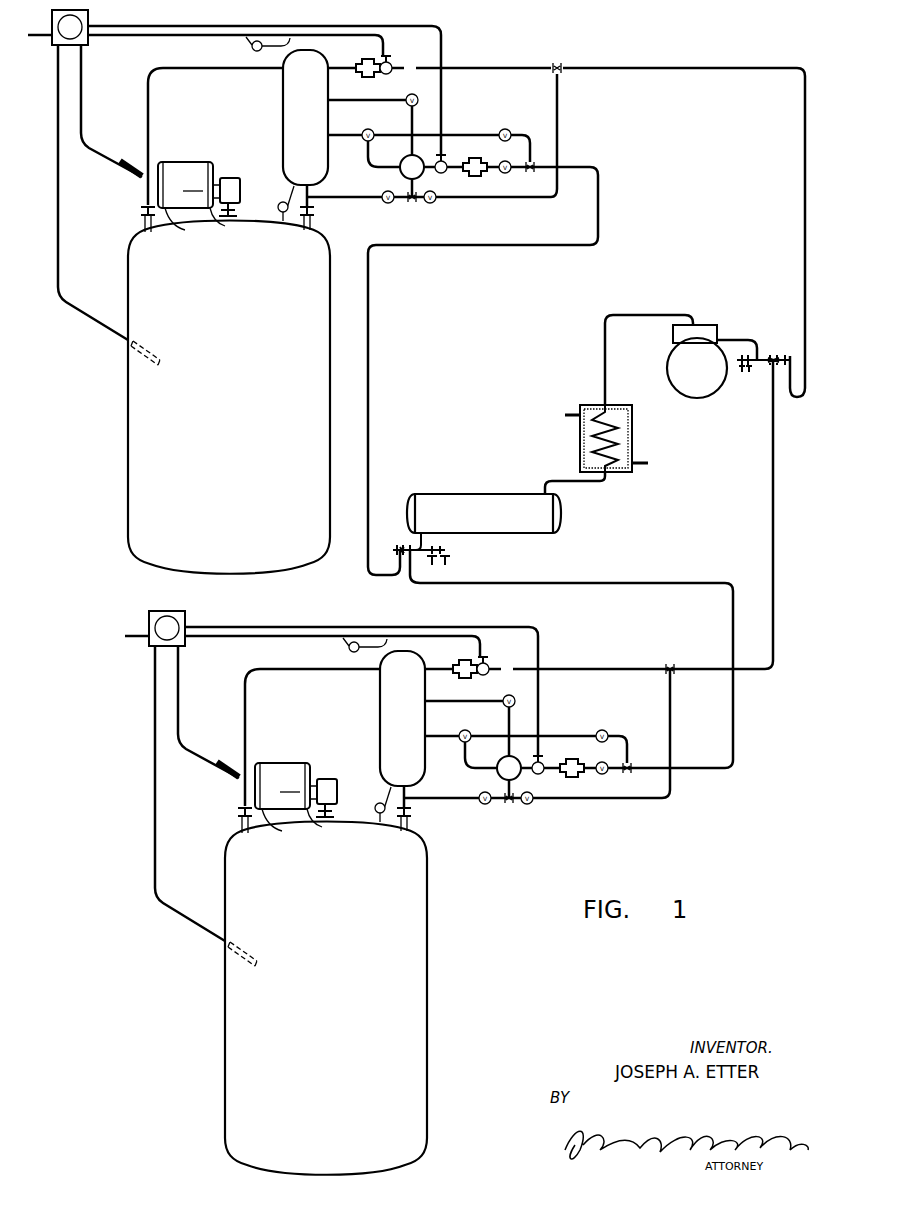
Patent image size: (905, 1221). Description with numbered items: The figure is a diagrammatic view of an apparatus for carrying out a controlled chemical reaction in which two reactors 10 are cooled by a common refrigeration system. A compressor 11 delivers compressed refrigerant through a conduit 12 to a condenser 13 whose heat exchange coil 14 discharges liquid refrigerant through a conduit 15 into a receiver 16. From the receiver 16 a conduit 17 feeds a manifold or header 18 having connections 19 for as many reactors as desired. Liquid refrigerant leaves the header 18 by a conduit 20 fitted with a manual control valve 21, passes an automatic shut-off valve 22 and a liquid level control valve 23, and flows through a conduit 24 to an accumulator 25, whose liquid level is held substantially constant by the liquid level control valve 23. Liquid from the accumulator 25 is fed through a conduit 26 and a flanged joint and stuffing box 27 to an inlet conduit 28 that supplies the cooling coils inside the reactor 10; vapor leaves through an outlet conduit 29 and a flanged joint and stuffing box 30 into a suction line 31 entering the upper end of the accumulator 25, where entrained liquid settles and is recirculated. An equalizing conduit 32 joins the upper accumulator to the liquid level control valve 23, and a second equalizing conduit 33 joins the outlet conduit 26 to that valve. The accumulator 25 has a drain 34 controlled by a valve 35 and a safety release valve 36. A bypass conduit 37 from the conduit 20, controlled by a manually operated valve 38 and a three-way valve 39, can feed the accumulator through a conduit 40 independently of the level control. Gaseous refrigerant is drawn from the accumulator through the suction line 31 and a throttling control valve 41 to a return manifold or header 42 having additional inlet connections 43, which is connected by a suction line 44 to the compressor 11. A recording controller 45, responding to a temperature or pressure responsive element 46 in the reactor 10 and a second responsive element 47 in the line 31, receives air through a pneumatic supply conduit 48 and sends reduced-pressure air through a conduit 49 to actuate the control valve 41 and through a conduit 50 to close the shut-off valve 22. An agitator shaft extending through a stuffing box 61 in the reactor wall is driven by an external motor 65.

The reactor 10 is at (120, 432).
The compressor 11 is at (708, 388).
The conduit 12 is at (658, 313).
The condenser 13 is at (633, 431).
The heat exchange coil 14 is at (620, 414).
The conduit 15 is at (593, 487).
The receiver 16 is at (489, 493).
The conduit 17 is at (396, 548).
The manifold or header 18 is at (440, 552).
The connections 19 is at (448, 563).
The conduit 20 is at (480, 247).
The manual control valve 21 is at (506, 175).
The automatic shut-off valve 22 is at (442, 175).
The liquid level control valve 23 is at (399, 173).
The conduit 24 is at (368, 151).
The accumulator 25 is at (283, 122).
The conduit 26 is at (313, 191).
The flanged joint and stuffing box 27 is at (316, 213).
The inlet conduit 28 is at (314, 229).
The outlet conduit 29 is at (145, 232).
The flanged joint and stuffing box 30 is at (141, 212).
The suction line 31 is at (149, 115).
The equalizing conduit 32 is at (410, 120).
The second equalizing conduit 33 is at (389, 204).
The drain 34 is at (288, 192).
The valve 35 is at (279, 205).
The safety release valve 36 is at (251, 47).
The bypass conduit 37 is at (531, 140).
The manually operated valve 38 is at (506, 129).
The three-way valve 39 is at (370, 122).
The conduit 40 is at (345, 135).
The control valve 41 is at (391, 75).
The return manifold or header 42 is at (788, 355).
The additional inlet connections 43 is at (756, 372).
The suction line 44 is at (735, 340).
The controller 45 is at (90, 17).
The temperature or pressure responsive element 46 is at (160, 348).
The second temperature or pressure responsive element 47 is at (138, 165).
The pneumatic supply conduit 48 is at (35, 37).
The conduit 49 is at (205, 27).
The conduit 50 is at (443, 87).
The stuffing box 61 is at (230, 219).
The motor 65 is at (247, 496).